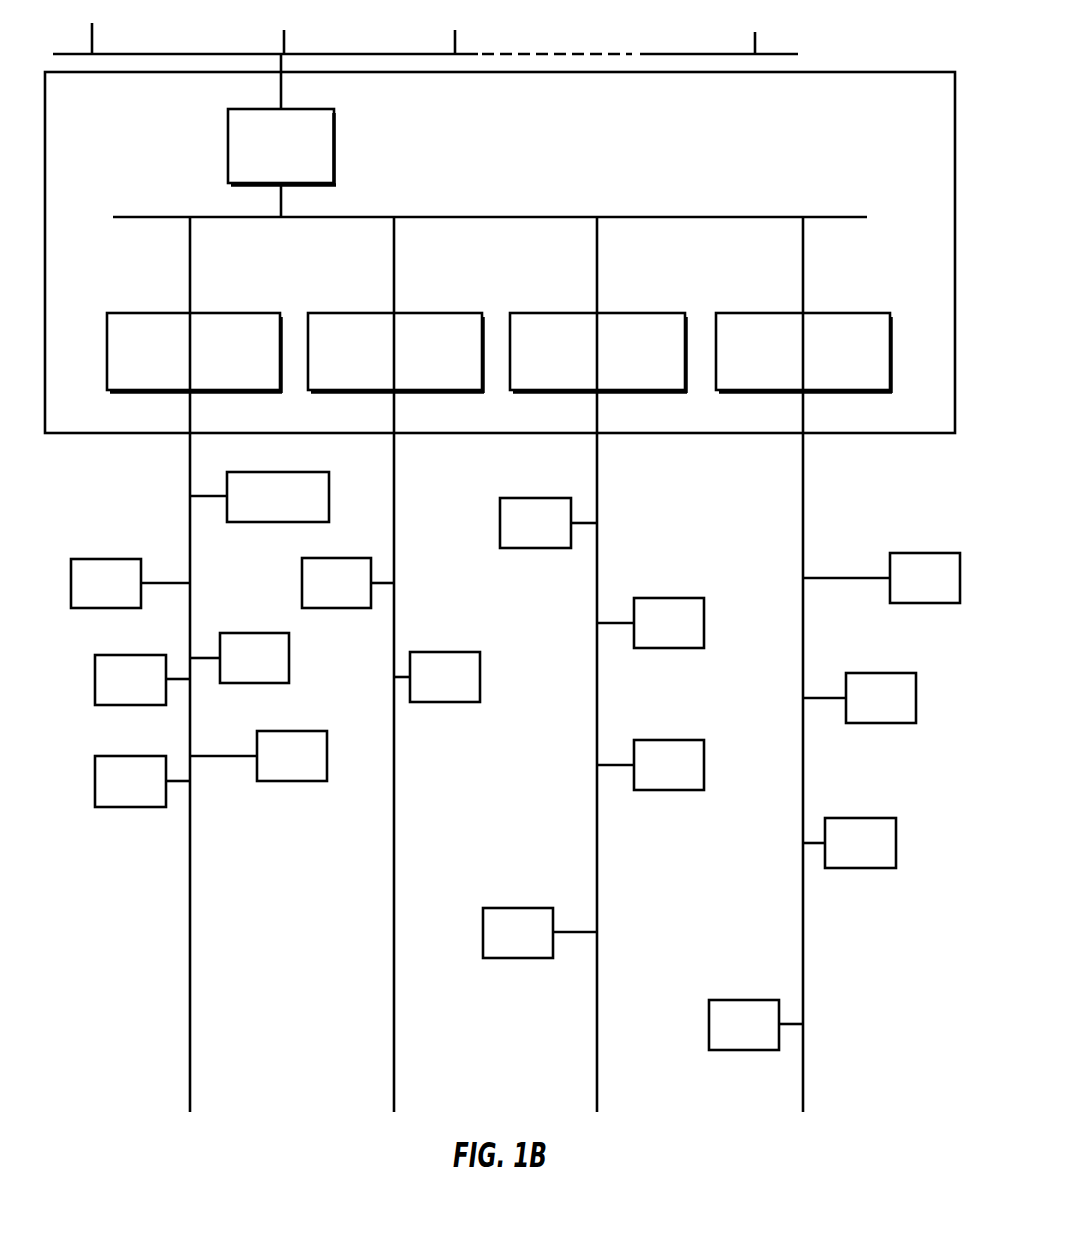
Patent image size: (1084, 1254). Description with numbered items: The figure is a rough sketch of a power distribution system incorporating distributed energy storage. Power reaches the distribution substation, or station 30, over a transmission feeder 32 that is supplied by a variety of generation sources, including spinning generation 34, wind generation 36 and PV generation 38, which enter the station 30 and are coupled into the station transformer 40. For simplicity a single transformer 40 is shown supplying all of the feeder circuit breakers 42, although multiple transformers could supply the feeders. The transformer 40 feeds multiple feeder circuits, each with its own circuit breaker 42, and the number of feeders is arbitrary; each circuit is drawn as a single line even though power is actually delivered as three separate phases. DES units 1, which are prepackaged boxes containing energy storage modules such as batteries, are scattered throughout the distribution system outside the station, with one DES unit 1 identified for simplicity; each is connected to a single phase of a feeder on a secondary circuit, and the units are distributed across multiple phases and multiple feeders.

The DES unit 1 is at (85, 558).
The distribution substation 30 is at (500, 252).
The transmission feeder 32 is at (782, 53).
The spinning generation 34 is at (92, 32).
The wind generation 36 is at (284, 41).
The PV generation 38 is at (455, 41).
The station transformer 40 is at (282, 135).
The feeder circuit breaker 42 is at (499, 353).